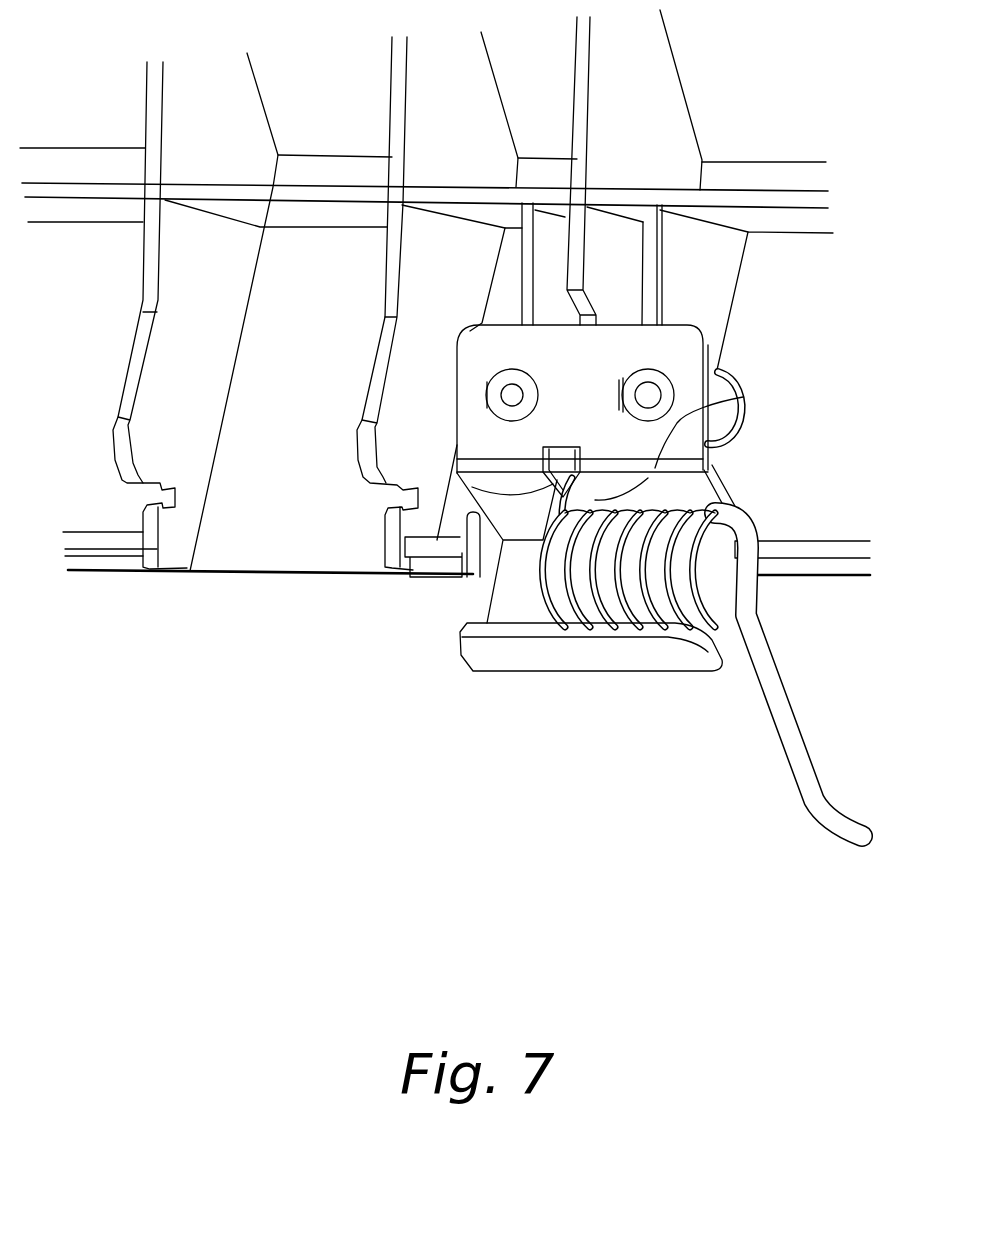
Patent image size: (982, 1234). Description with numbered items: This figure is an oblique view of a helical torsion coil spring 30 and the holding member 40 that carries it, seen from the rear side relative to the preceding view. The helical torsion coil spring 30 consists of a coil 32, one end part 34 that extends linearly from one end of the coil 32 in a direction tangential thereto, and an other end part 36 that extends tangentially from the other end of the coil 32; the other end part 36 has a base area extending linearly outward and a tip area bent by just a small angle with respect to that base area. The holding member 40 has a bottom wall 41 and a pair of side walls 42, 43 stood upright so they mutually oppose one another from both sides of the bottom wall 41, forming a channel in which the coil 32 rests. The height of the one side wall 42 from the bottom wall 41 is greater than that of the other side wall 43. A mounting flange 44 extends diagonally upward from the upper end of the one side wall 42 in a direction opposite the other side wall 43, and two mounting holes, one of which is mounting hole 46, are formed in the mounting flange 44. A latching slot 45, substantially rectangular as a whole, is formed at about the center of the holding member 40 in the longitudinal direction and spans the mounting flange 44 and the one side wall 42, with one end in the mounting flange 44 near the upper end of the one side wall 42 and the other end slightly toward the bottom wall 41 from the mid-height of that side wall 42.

The helical torsion coil spring 30 is at (762, 607).
The coil 32 is at (607, 603).
The one end part 34 is at (743, 397).
The other end part 36 is at (795, 752).
The holding member 40 is at (515, 672).
The bottom wall 41 is at (498, 605).
The one side wall 42 is at (695, 489).
The other side wall 43 is at (659, 657).
The mounting flange 44 is at (693, 442).
The latching slot 45 is at (472, 487).
The mounting hole 46 is at (648, 370).